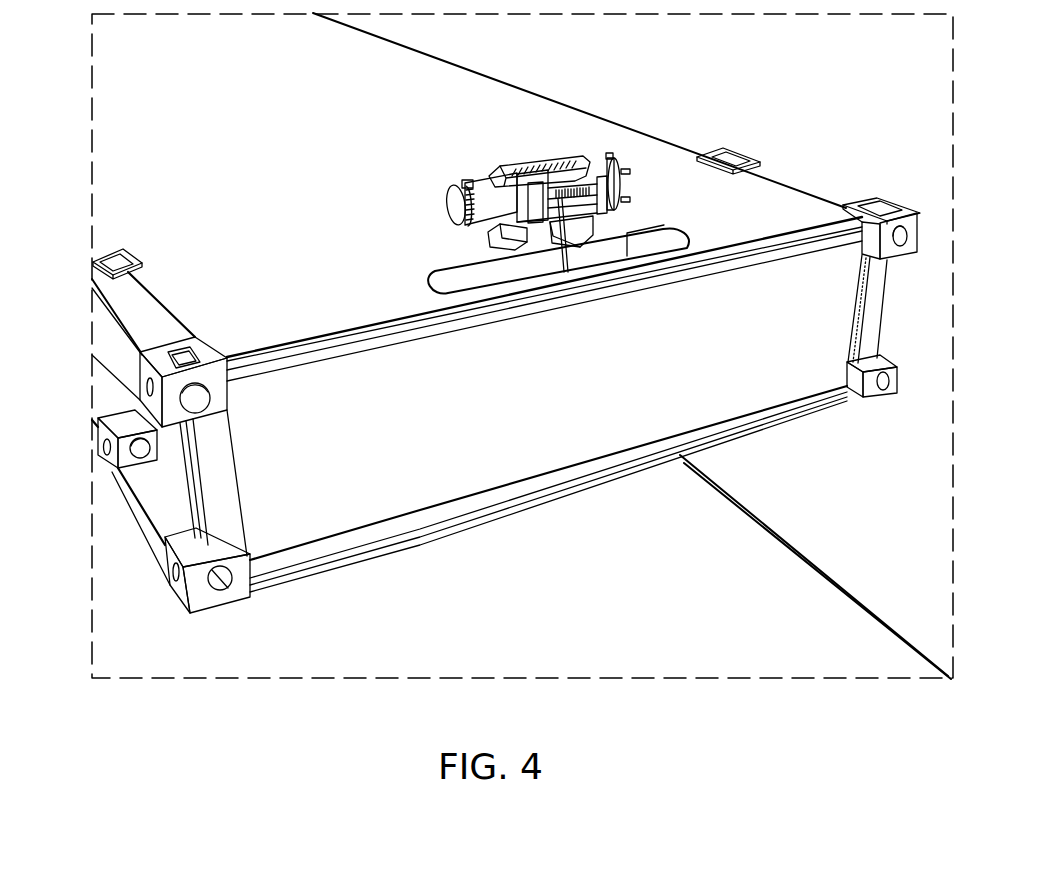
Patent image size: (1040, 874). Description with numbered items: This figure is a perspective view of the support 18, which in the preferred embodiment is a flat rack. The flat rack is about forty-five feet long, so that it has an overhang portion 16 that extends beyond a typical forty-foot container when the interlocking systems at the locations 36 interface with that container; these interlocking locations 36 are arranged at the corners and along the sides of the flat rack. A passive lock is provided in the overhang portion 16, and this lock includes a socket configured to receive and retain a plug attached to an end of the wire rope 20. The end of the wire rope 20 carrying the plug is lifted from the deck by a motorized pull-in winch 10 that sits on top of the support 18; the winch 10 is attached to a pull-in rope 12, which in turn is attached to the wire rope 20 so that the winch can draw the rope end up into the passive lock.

The motorized pull-in winch 10 is at (540, 165).
The pull-in rope 12 is at (552, 262).
The overhang portion 16 is at (580, 362).
The support 18 is at (760, 412).
The wire rope 20 is at (760, 538).
The interlocking system locations 36 is at (93, 264).